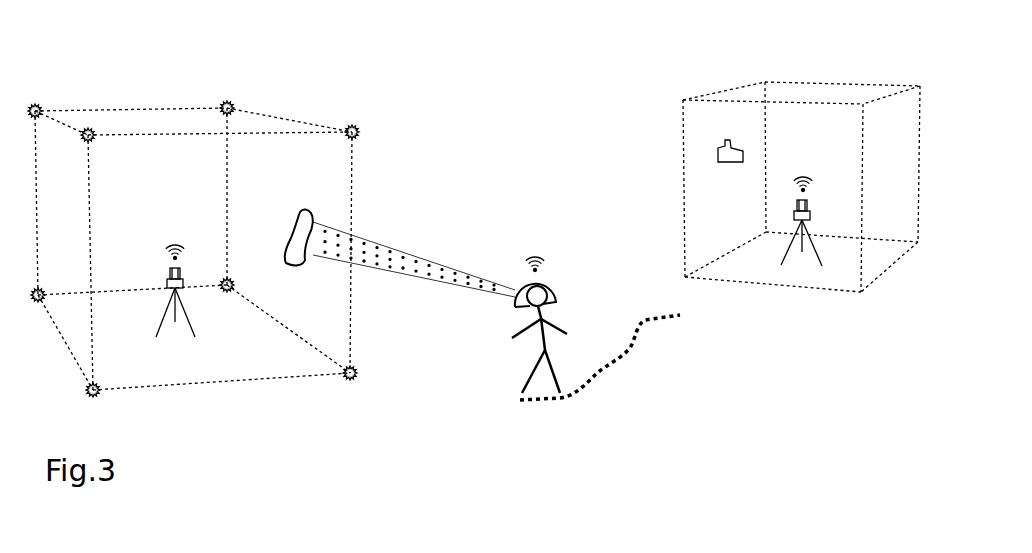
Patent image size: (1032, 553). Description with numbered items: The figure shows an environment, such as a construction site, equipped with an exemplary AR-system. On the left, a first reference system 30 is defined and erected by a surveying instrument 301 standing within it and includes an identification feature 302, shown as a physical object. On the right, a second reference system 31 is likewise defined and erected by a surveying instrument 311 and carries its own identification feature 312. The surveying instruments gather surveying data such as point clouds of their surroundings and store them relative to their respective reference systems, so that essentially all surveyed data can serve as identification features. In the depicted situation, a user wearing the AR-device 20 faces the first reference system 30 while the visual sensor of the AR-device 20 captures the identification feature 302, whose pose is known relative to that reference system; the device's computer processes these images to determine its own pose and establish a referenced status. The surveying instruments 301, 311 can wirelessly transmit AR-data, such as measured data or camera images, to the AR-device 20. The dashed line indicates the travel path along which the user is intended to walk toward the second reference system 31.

The first reference system 30 is at (292, 133).
The surveying instrument 301 is at (184, 335).
The identification feature 302 is at (311, 213).
The AR-device 20 is at (520, 297).
The second reference system 31 is at (737, 98).
The surveying instrument 311 is at (795, 268).
The identification feature 312 is at (720, 146).